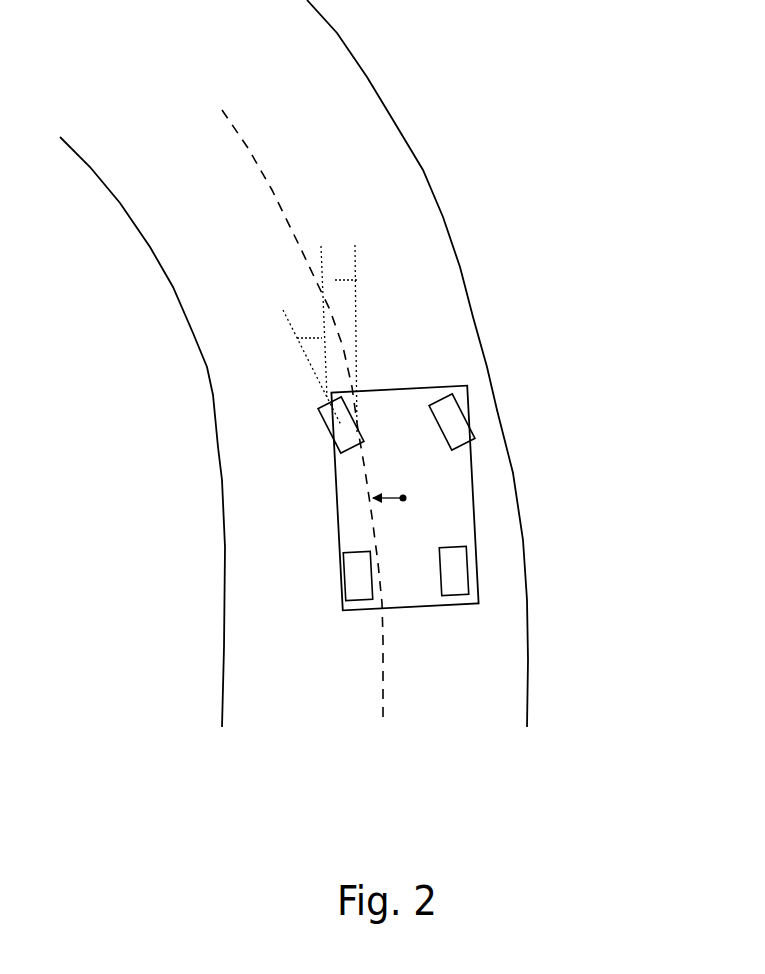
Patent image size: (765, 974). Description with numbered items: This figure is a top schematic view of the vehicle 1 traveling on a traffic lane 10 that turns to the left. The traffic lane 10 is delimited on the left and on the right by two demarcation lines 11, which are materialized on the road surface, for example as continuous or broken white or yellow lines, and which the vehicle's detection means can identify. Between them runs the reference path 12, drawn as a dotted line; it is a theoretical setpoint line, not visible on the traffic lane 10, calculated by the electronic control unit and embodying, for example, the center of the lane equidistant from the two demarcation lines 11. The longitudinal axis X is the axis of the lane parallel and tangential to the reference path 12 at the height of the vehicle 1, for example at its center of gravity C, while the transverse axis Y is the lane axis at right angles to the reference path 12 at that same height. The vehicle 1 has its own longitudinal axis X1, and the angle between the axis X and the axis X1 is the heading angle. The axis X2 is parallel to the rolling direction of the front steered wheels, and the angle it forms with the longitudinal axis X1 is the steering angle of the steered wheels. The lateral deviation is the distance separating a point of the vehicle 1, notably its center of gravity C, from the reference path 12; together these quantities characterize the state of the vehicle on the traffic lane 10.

The vehicle 1 is at (437, 427).
The traffic lane 10 is at (309, 406).
The demarcation lines 11 is at (425, 172).
The reference path 12 is at (387, 652).
The center of gravity C is at (412, 500).
The longitudinal axis of the traffic lane X is at (321, 246).
The longitudinal axis of the vehicle X1 is at (353, 368).
The axis parallel to the rolling direction of the front steered wheels X2 is at (303, 363).
The transverse axis Y is at (386, 509).